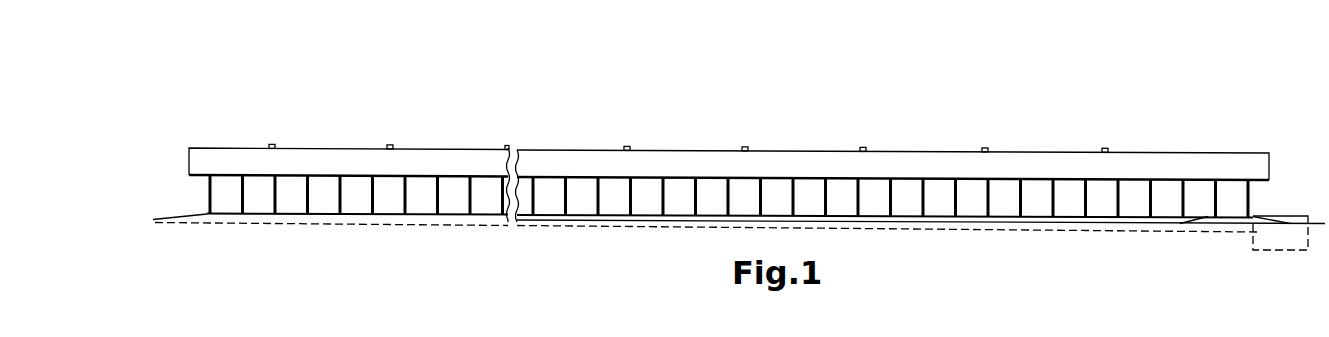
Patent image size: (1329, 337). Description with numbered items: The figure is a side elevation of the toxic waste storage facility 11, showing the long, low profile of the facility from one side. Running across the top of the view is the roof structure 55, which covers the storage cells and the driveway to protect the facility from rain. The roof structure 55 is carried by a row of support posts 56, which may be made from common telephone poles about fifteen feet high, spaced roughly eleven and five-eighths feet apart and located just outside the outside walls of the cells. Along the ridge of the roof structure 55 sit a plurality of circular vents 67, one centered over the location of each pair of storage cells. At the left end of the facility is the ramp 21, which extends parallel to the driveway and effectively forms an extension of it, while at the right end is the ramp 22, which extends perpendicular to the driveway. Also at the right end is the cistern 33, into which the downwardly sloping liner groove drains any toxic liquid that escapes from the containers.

The toxic waste storage facility 11 is at (1036, 119).
The ramp 21 is at (186, 217).
The ramp 22 is at (1228, 220).
The cistern 33 is at (1288, 223).
The roof structure 55 is at (653, 162).
The support posts 56 is at (470, 203).
The circular vents 67 is at (390, 145).